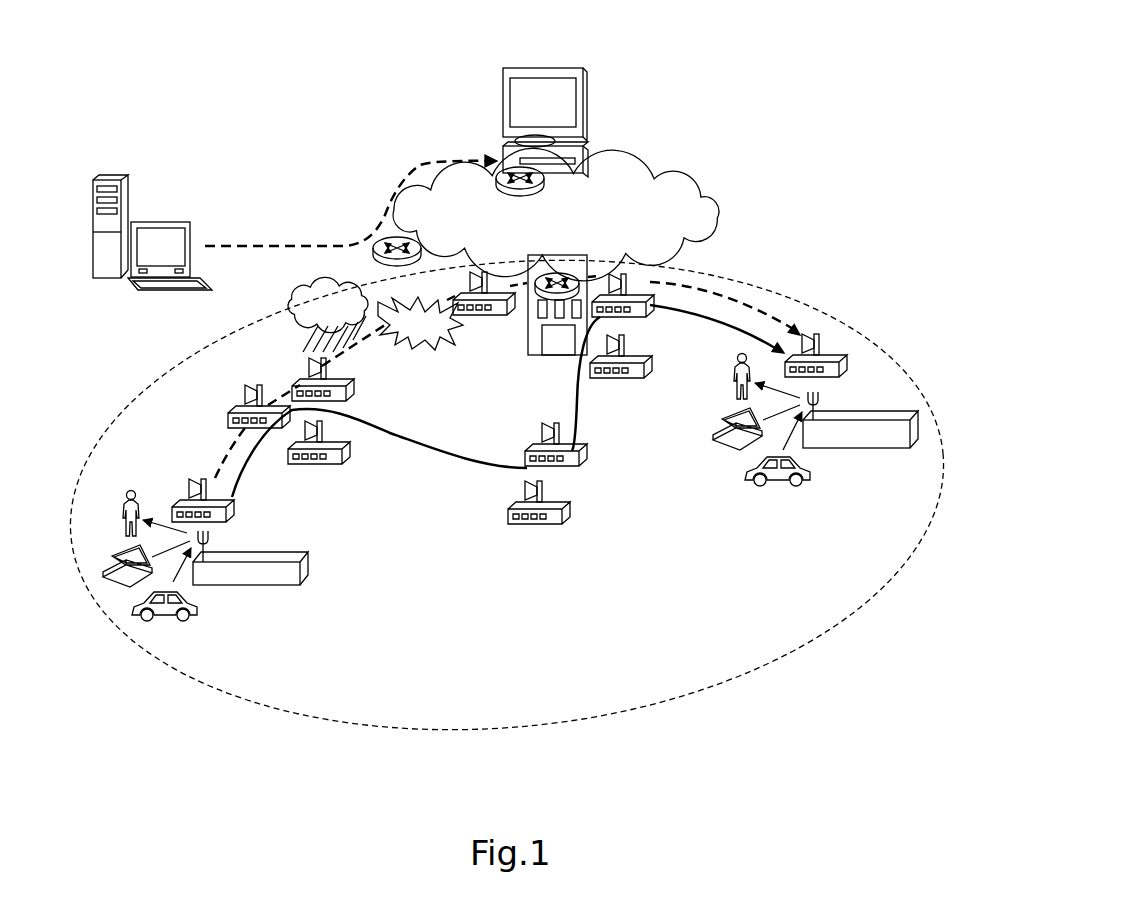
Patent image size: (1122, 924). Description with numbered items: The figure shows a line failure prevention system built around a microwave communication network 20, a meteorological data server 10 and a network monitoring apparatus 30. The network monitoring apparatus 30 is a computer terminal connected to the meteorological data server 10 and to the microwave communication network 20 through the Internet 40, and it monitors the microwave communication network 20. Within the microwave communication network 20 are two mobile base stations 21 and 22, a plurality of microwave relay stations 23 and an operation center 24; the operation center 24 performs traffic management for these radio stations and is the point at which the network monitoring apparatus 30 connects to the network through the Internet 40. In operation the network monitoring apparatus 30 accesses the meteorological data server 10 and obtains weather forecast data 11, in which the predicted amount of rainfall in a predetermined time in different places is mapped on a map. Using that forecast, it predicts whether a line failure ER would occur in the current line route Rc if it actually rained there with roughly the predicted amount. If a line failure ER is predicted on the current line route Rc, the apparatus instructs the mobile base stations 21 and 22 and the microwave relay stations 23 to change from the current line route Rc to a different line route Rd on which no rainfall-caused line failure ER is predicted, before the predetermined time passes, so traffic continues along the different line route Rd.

The meteorological data server 10 is at (110, 174).
The weather forecast data 11 is at (447, 160).
The microwave communication network 20 is at (202, 683).
The mobile base station 21 is at (308, 568).
The mobile base station 22 is at (833, 449).
The microwave relay station 23 is at (483, 317).
The operation center 24 is at (546, 357).
The network monitoring apparatus 30 is at (563, 66).
The Internet 40 is at (708, 186).
The current line route Rc is at (737, 302).
The different line route Rd is at (735, 335).
The line failure ER is at (438, 356).